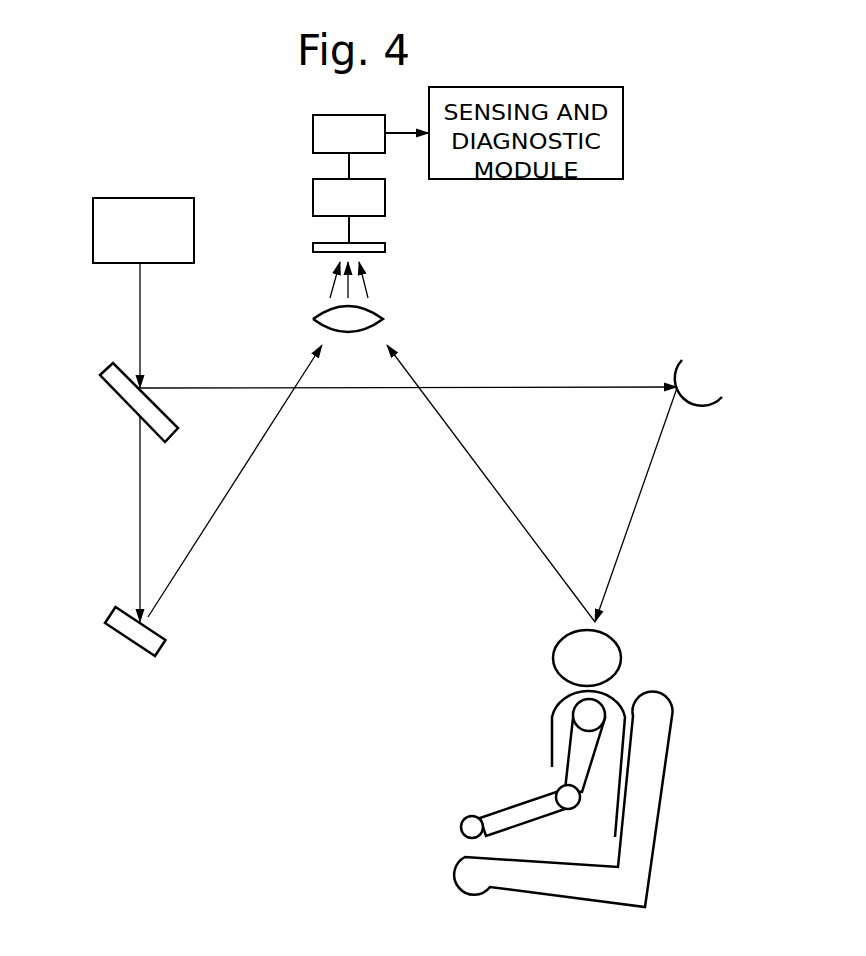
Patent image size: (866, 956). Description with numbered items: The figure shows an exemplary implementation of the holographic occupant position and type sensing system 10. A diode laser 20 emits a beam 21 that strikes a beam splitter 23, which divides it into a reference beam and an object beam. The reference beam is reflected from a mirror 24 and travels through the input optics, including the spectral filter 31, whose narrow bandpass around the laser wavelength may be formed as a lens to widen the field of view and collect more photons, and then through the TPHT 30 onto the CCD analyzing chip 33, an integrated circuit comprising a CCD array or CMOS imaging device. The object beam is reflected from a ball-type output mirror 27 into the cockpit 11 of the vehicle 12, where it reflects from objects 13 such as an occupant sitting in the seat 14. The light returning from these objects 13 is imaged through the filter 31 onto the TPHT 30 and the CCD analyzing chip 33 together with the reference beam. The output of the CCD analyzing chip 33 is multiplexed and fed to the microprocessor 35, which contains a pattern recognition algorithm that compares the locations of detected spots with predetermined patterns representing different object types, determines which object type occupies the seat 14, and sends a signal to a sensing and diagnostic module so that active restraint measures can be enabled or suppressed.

The holographic occupant position and type sensing system 10 is at (120, 145).
The cockpit 11 is at (443, 693).
The vehicle 12 is at (778, 368).
The objects 13 is at (550, 724).
The seat 14 is at (655, 692).
The diode laser 20 is at (173, 197).
The beam 21 is at (140, 312).
The beam splitter 23 is at (100, 376).
The mirror 24 is at (152, 658).
The ball-type output mirror 27 is at (713, 406).
The TPHT 30 is at (312, 247).
The spectral filter 31 is at (385, 320).
The CCD analyzing chip 33 is at (312, 194).
The microprocessor 35 is at (312, 137).